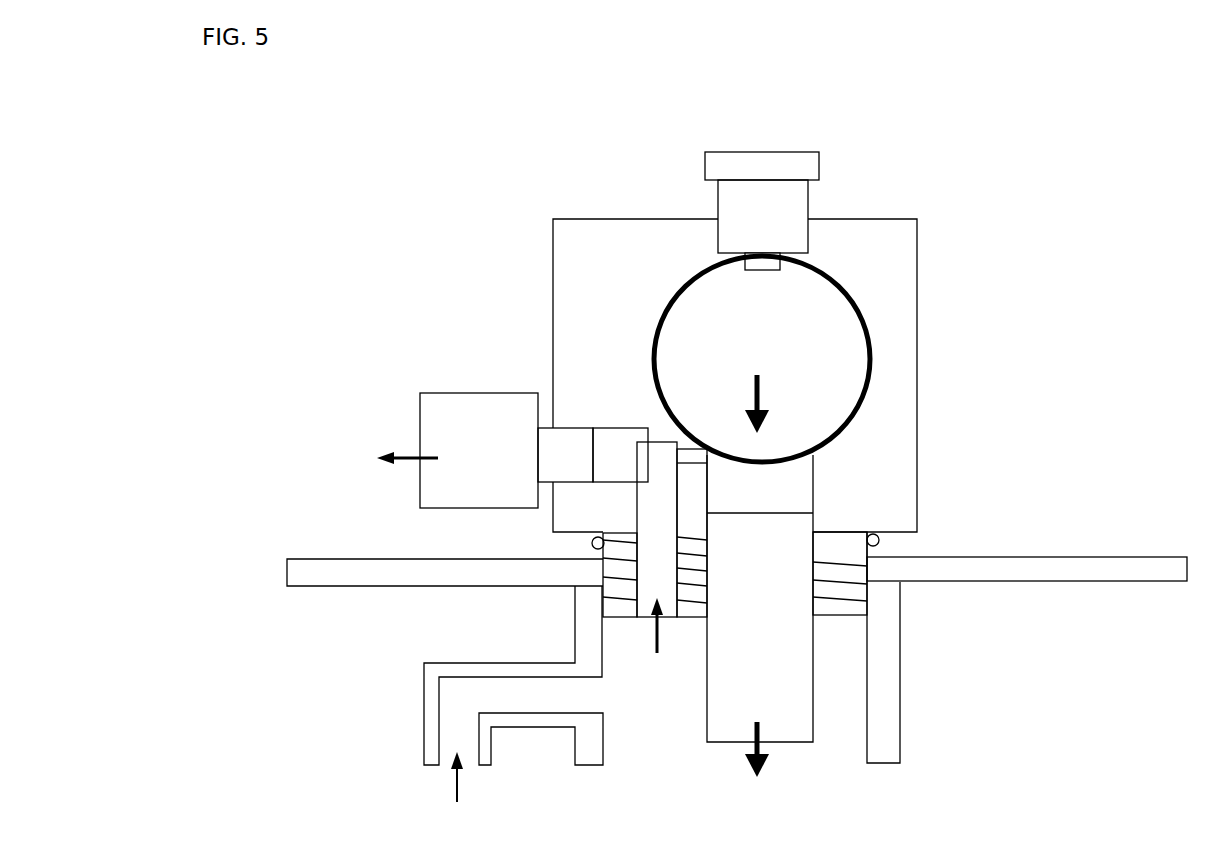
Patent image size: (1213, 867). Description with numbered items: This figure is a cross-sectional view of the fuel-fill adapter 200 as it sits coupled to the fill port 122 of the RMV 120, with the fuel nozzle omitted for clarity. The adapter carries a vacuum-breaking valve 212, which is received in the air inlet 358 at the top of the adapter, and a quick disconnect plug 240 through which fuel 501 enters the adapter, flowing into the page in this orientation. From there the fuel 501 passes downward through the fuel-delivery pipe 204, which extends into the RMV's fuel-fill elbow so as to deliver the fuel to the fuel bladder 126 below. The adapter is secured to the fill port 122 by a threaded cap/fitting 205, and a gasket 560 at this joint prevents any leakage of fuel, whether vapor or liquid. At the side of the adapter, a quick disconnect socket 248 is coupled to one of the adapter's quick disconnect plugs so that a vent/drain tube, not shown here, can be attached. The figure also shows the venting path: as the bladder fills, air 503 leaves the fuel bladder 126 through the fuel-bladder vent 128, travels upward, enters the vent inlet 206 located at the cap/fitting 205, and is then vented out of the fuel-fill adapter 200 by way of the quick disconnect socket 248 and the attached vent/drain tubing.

The fuel-fill adapter 200 is at (403, 160).
The air inlet 358 is at (812, 220).
The vacuum-breaking valve 212 is at (745, 222).
The quick disconnect plug 240 is at (872, 352).
The fuel 501 is at (776, 574).
The air 503 is at (513, 621).
The quick disconnect socket 248 is at (470, 454).
The vent inlet 206 is at (672, 604).
The fuel-delivery pipe 204 is at (739, 630).
The fill port 122 is at (820, 680).
The cap/fitting 205 is at (842, 573).
The gasket 560 is at (879, 541).
The RMV 120 is at (737, 558).
The fuel-bladder vent 128 is at (513, 675).
The fuel bladder 126 is at (754, 793).